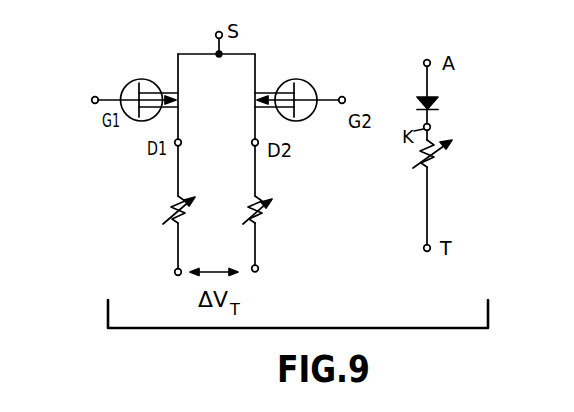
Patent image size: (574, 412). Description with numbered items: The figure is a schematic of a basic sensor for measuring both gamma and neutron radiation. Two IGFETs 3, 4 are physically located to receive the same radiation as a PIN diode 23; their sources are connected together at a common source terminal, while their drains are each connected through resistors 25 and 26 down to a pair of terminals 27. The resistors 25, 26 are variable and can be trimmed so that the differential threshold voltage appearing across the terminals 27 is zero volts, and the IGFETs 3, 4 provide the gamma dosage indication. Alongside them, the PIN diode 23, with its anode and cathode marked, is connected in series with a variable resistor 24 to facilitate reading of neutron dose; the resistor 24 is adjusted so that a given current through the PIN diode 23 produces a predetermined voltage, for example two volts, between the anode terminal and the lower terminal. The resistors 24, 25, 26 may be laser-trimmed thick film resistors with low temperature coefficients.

The IGFET 3 is at (143, 79).
The IGFET 4 is at (281, 84).
The PIN diode 23 is at (440, 101).
The variable resistor 24 is at (433, 165).
The resistor 25 is at (168, 207).
The resistor 26 is at (264, 218).
The terminals 27 is at (174, 275).